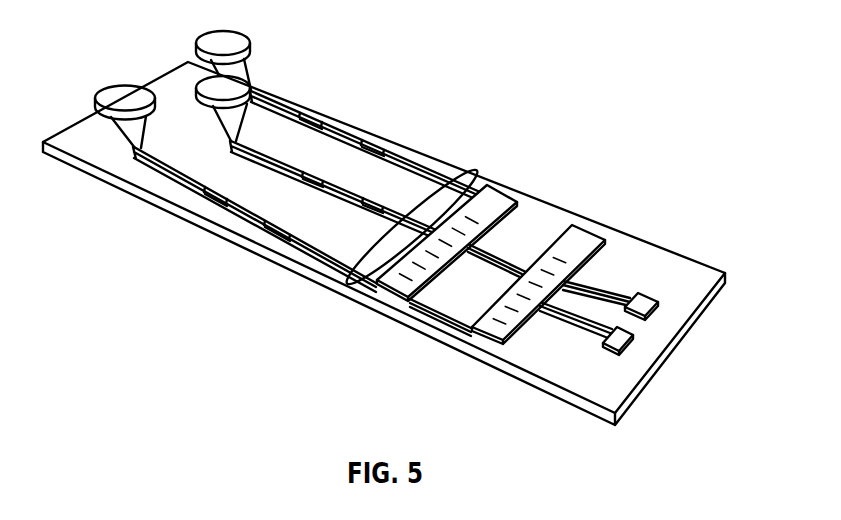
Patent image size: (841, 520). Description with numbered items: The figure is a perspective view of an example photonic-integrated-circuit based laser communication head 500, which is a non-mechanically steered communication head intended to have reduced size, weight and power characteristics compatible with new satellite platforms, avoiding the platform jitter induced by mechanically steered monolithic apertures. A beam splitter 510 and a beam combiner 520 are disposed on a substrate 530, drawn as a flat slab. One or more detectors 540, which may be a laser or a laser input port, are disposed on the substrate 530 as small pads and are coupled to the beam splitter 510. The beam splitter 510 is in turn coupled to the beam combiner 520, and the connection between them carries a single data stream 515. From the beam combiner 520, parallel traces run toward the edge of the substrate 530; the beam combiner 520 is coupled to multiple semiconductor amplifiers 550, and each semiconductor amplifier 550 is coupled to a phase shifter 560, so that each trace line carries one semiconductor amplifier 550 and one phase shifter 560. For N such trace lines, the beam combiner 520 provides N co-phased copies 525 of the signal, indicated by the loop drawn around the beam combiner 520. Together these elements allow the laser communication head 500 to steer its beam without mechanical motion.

The laser communication head 500 is at (525, 48).
The beam splitter 510 is at (482, 333).
The single data stream 515 is at (472, 250).
The beam combiner 520 is at (390, 298).
The co-phased copies 525 is at (477, 171).
The substrate 530 is at (178, 205).
The detectors 540 is at (650, 292).
The semiconductor amplifiers 550 is at (373, 141).
The phase shifter 560 is at (313, 121).